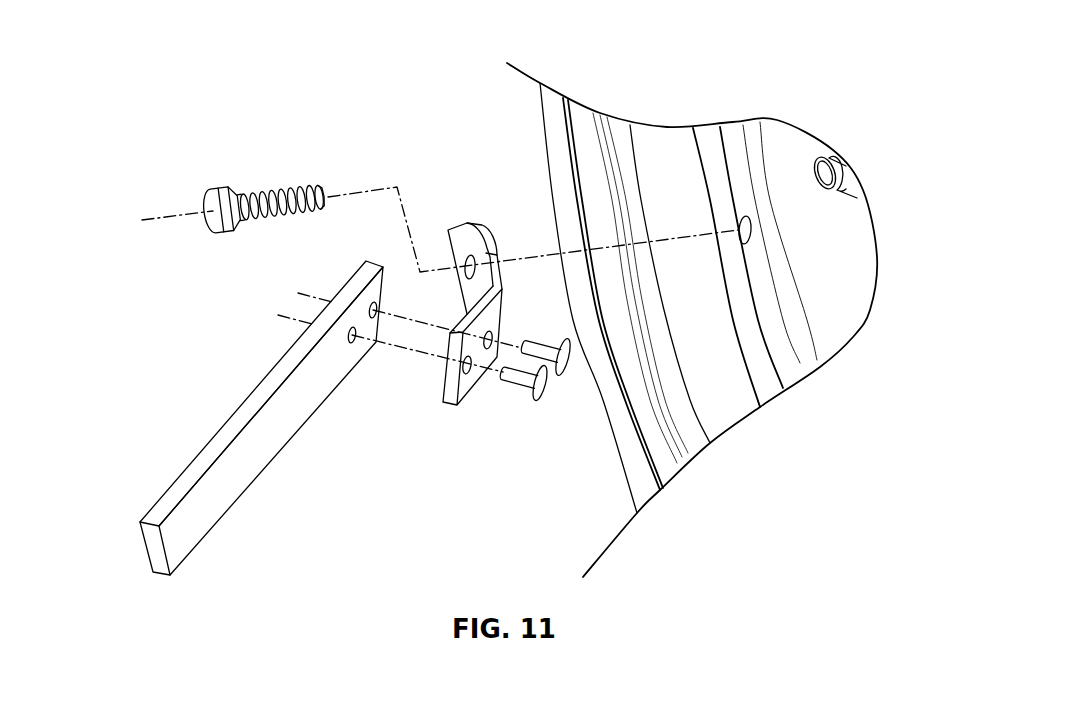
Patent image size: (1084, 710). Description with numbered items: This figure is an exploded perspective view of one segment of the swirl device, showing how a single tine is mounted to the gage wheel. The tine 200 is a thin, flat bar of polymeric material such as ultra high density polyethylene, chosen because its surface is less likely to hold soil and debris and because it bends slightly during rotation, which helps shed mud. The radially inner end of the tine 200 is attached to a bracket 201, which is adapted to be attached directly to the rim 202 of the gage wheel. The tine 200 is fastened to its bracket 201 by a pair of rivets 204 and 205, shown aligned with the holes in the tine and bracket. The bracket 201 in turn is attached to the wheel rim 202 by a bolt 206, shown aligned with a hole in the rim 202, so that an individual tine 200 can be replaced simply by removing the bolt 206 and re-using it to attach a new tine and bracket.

The tine 200 is at (195, 526).
The bracket 201 is at (452, 405).
The rim 202 is at (730, 413).
The rivet 204 is at (520, 377).
The rivet 205 is at (565, 360).
The bolt 206 is at (283, 192).